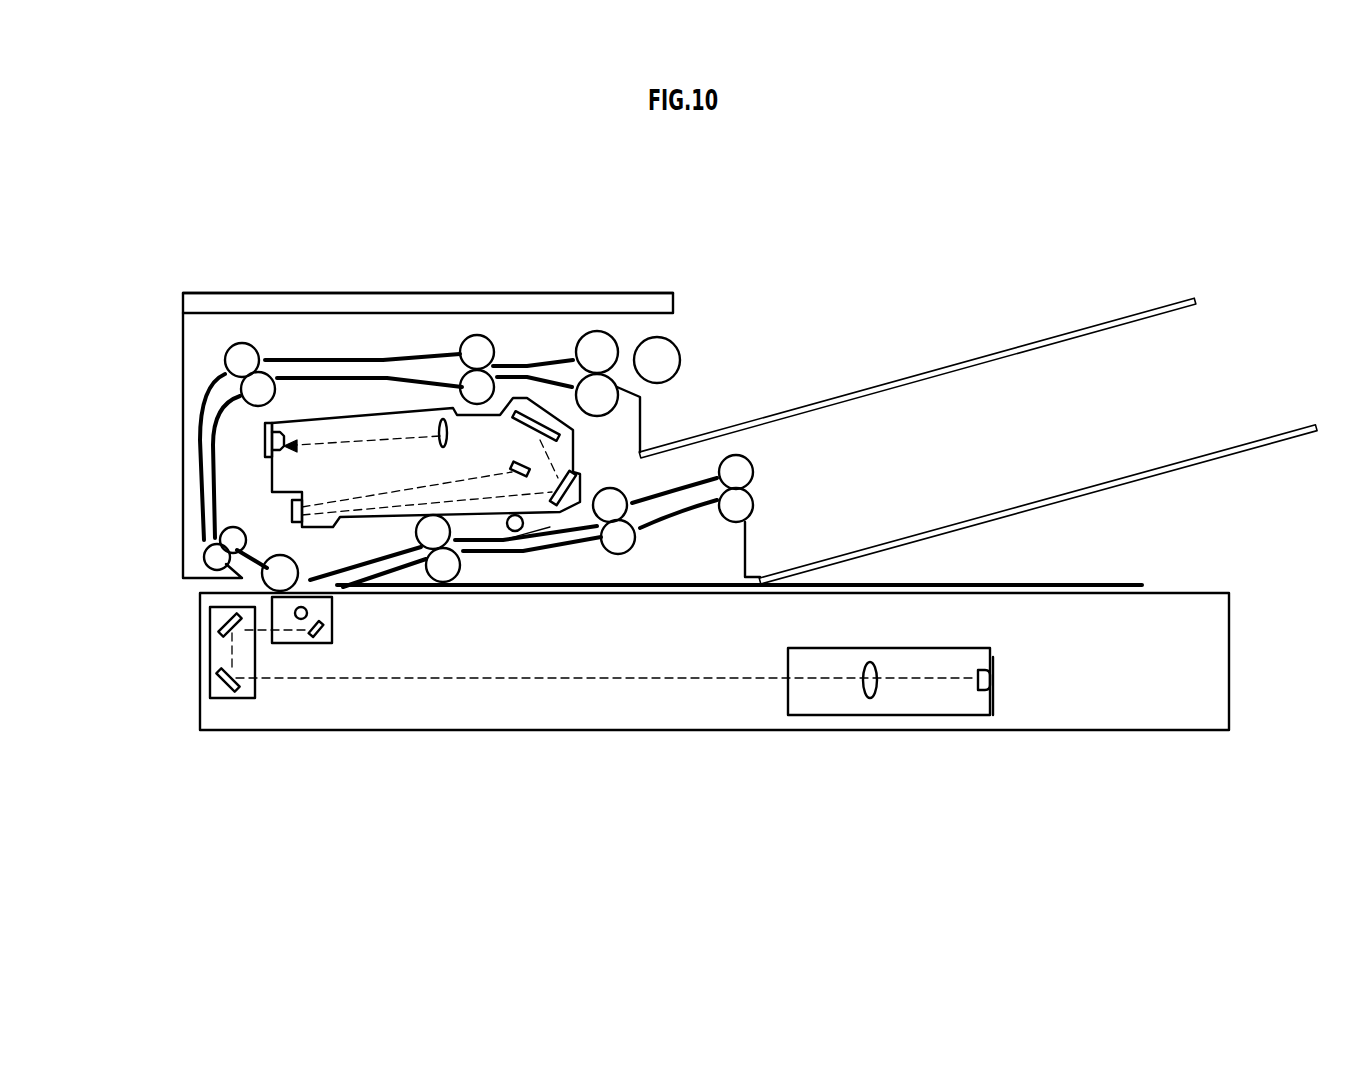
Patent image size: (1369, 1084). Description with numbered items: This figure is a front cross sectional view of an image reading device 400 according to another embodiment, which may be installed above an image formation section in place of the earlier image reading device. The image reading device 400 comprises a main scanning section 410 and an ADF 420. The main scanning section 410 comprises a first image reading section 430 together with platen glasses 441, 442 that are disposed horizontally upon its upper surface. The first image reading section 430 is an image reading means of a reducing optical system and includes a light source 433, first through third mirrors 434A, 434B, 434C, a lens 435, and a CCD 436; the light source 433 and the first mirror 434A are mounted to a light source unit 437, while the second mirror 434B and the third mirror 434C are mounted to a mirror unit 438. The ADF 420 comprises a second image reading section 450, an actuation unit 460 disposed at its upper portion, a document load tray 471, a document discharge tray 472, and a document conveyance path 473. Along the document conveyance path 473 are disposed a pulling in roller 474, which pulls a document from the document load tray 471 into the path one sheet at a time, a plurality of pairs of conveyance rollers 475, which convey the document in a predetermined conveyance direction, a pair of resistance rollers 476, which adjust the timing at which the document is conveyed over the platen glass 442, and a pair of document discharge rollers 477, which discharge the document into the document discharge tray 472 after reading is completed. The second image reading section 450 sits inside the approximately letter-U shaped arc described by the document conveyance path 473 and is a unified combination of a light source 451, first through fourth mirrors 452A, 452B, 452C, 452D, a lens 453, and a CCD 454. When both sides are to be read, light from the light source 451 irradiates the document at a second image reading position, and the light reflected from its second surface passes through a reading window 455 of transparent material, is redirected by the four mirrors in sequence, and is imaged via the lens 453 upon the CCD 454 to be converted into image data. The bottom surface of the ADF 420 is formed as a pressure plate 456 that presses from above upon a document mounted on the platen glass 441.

The image reading device 400 is at (1068, 228).
The main scanning section 410 is at (1243, 632).
The ADF 420 is at (864, 279).
The first image reading section 430 is at (1231, 664).
The light source 433 is at (298, 622).
The first mirror 434A is at (320, 640).
The second mirror 434B is at (222, 620).
The third mirror 434C is at (222, 684).
The lens 435 is at (867, 700).
The CCD 436 is at (985, 692).
The light source unit 437 is at (308, 658).
The mirror unit 438 is at (196, 654).
The platen glass 441 is at (1105, 579).
The platen glass 442 is at (300, 590).
The second image reading section 450 is at (333, 403).
The light source 451 is at (498, 542).
The first mirror 452A is at (512, 478).
The second mirror 452B is at (292, 512).
The third mirror 452C is at (576, 508).
The fourth mirror 452D is at (523, 413).
The lens 453 is at (445, 418).
The CCD 454 is at (265, 445).
The reading window 455 is at (538, 510).
The pressure plate 456 is at (515, 532).
The actuation unit 460 is at (527, 300).
The document load tray 471 is at (1130, 316).
The document discharge tray 472 is at (1249, 443).
The document conveyance path 473 is at (362, 372).
The pulling in roller 474 is at (653, 338).
The pairs of conveyance rollers 475 is at (238, 343).
The pair of resistance rollers 476 is at (205, 552).
The pair of document discharge rollers 477 is at (735, 455).